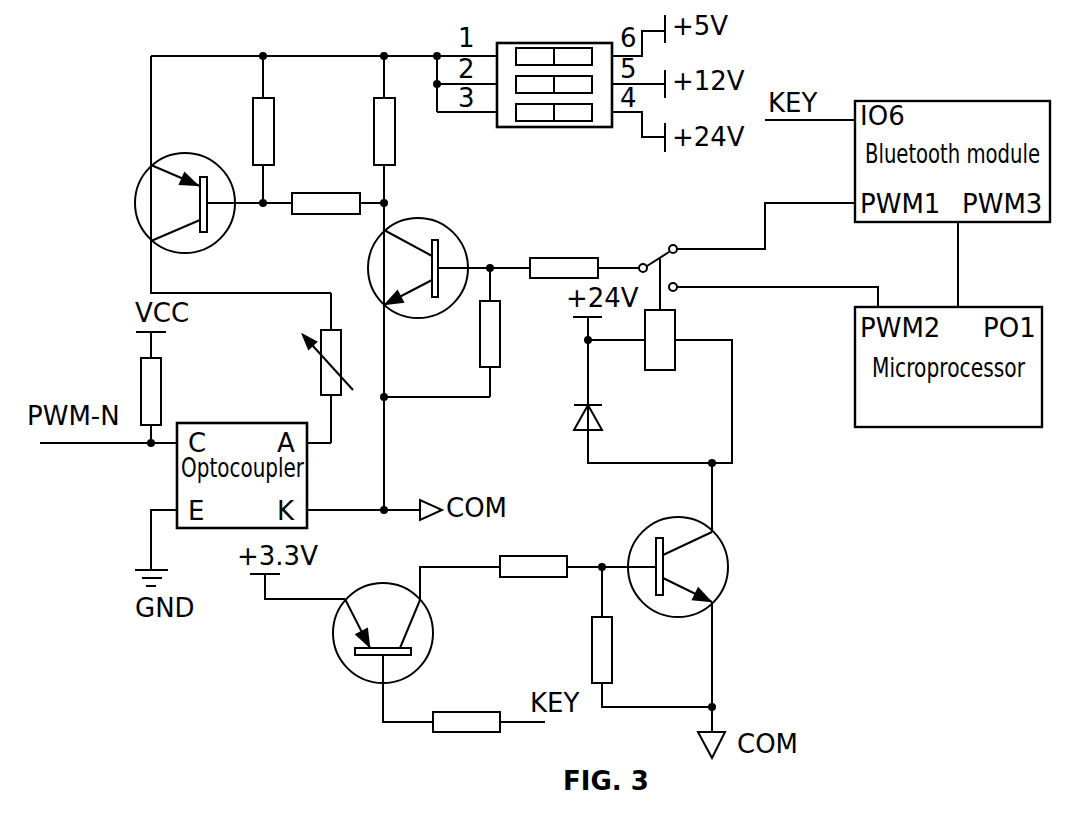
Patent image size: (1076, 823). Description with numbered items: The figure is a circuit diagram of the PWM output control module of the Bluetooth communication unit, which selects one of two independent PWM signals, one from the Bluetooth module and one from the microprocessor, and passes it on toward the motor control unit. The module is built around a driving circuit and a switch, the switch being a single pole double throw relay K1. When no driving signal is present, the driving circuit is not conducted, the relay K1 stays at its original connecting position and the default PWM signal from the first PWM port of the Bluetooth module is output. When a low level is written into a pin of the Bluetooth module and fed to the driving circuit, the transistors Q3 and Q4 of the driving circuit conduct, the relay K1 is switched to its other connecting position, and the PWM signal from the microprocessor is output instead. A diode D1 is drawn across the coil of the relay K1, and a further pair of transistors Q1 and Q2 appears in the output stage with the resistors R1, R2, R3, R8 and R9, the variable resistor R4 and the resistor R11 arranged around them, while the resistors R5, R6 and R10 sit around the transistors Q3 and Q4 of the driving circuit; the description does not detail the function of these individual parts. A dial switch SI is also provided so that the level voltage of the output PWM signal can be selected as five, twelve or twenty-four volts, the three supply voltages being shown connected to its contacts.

The transistor Q1 is at (185, 181).
The transistor Q2 is at (422, 253).
The transistor Q3 is at (701, 565).
The transistor Q4 is at (383, 614).
The resistor R1 is at (284, 129).
The resistor R2 is at (405, 129).
The resistor R3 is at (338, 189).
The variable resistor R4 is at (342, 368).
The resistor R5 is at (578, 550).
The resistor R6 is at (652, 637).
The resistor R8 is at (584, 251).
The resistor R9 is at (512, 332).
The resistor R10 is at (489, 705).
The resistor R11 is at (179, 387).
The diode D1 is at (610, 416).
The relay K1 is at (665, 354).
The dial switch SI is at (554, 68).